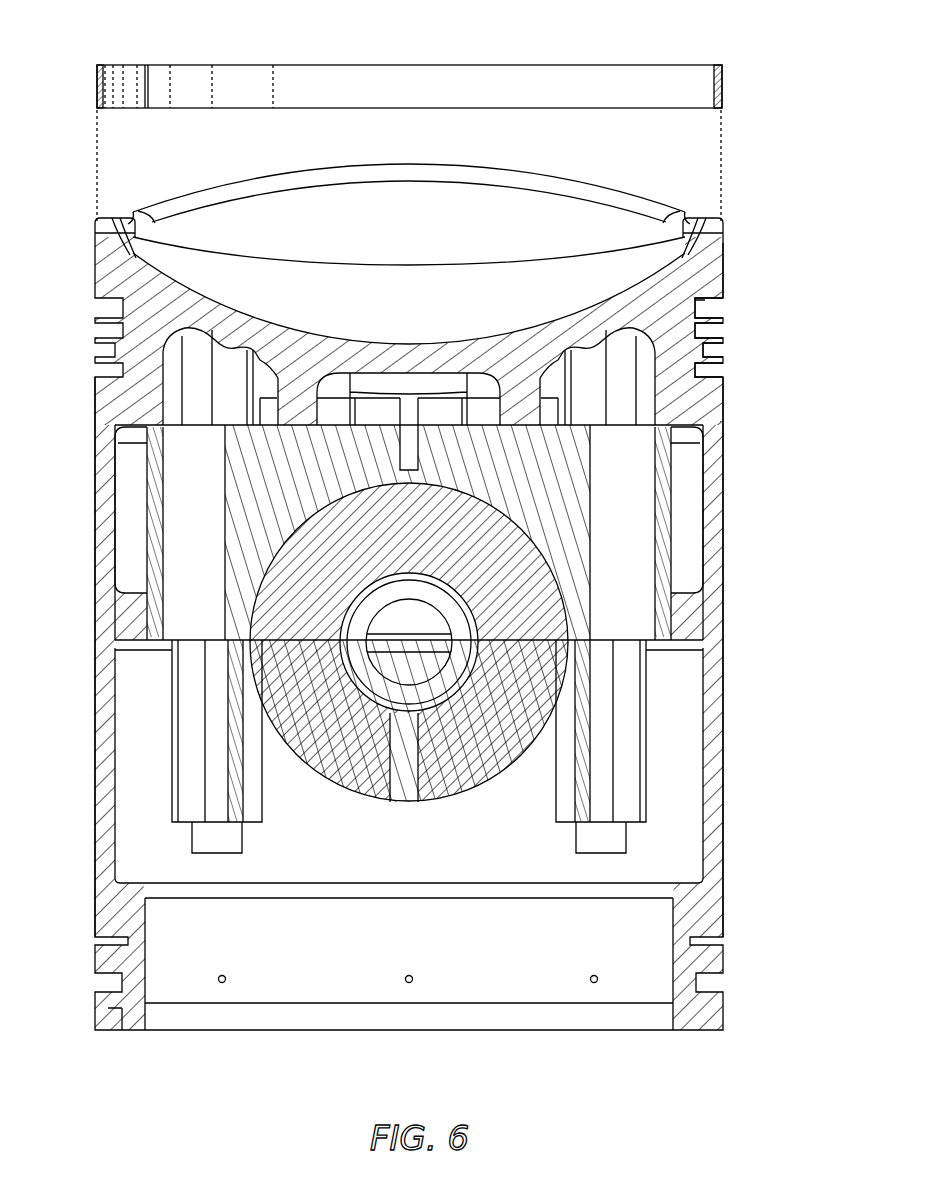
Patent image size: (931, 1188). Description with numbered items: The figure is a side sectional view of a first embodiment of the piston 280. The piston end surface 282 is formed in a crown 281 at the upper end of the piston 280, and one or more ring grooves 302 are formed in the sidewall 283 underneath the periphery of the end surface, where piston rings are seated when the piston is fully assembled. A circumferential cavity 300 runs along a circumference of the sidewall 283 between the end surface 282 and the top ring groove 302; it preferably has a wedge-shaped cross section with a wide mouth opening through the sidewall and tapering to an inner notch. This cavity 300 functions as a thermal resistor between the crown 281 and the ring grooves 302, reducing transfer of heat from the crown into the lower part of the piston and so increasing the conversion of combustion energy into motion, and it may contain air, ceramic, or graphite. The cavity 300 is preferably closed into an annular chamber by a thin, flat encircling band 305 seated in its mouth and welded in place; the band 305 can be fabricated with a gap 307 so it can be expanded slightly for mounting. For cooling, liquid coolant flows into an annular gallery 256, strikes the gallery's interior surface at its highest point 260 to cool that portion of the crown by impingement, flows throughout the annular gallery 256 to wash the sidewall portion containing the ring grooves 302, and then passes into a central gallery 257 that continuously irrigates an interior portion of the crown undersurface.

The band 305 is at (722, 80).
The gap 307 is at (147, 65).
The crown 281 is at (662, 171).
The piston end surface 282 is at (680, 225).
The cavity 300 is at (700, 283).
The ring grooves 302 is at (722, 312).
The highest point 260 is at (208, 330).
The annular gallery 256 is at (195, 398).
The central gallery 257 is at (333, 412).
The sidewall 283 is at (722, 498).
The piston 280 is at (733, 625).